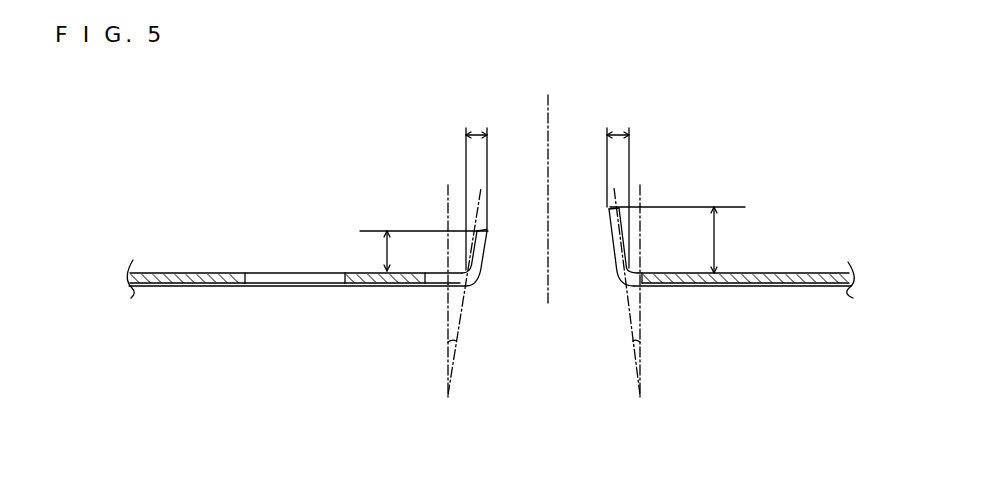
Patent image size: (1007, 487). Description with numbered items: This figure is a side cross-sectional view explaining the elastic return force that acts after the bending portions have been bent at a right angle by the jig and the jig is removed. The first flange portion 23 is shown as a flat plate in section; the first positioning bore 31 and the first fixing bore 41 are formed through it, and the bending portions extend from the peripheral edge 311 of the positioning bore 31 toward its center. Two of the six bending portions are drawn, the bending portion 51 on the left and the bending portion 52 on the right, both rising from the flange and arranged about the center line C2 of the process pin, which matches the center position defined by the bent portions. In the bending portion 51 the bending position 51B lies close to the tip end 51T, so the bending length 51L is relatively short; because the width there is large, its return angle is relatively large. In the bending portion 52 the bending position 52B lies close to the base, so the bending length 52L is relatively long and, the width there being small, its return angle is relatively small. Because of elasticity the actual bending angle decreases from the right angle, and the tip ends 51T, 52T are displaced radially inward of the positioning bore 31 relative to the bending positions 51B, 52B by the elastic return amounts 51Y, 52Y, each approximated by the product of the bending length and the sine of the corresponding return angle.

The first flange portion 23 is at (164, 273).
The first fixing bore 41 is at (300, 287).
The peripheral edge 311 is at (386, 287).
The bending portion 51 is at (434, 285).
The bending position 51B is at (476, 279).
The tip end 51T is at (488, 240).
The elastic return amount 51Y is at (474, 186).
The bending length 51L is at (409, 251).
The bending portion 52 is at (613, 252).
The bending position 52B is at (620, 277).
The tip end 52T is at (611, 223).
The elastic return amount 52Y is at (619, 185).
The bending length 52L is at (687, 240).
The center line C2 is at (547, 182).
The first positioning bore 31 is at (545, 305).